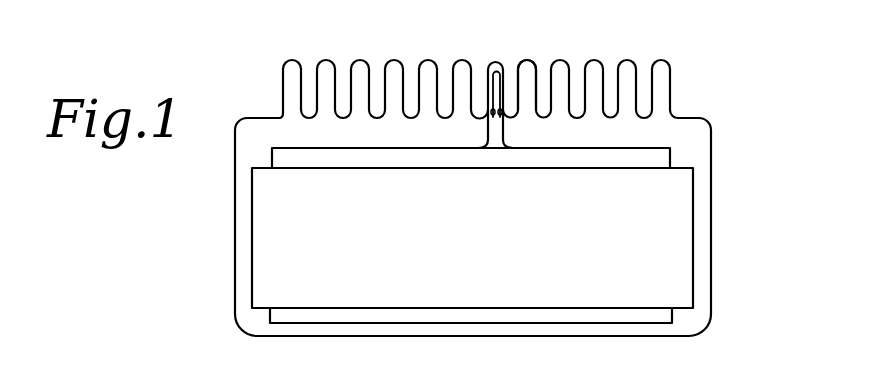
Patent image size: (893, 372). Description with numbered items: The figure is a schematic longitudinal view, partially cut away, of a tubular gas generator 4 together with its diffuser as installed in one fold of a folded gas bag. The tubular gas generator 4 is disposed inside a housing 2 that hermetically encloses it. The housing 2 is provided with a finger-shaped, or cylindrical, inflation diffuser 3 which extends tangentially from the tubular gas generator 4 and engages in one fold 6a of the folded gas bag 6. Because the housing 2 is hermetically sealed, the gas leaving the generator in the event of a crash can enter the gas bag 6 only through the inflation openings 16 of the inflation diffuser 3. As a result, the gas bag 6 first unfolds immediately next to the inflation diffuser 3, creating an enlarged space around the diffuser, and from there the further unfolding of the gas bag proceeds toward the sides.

The housing 2 is at (672, 157).
The inflation diffuser 3 is at (500, 58).
The tubular gas generator 4 is at (672, 248).
The folded gas bag 6 is at (675, 113).
The fold of the folded gas bag 6a is at (505, 93).
The inflation openings 16 is at (488, 88).